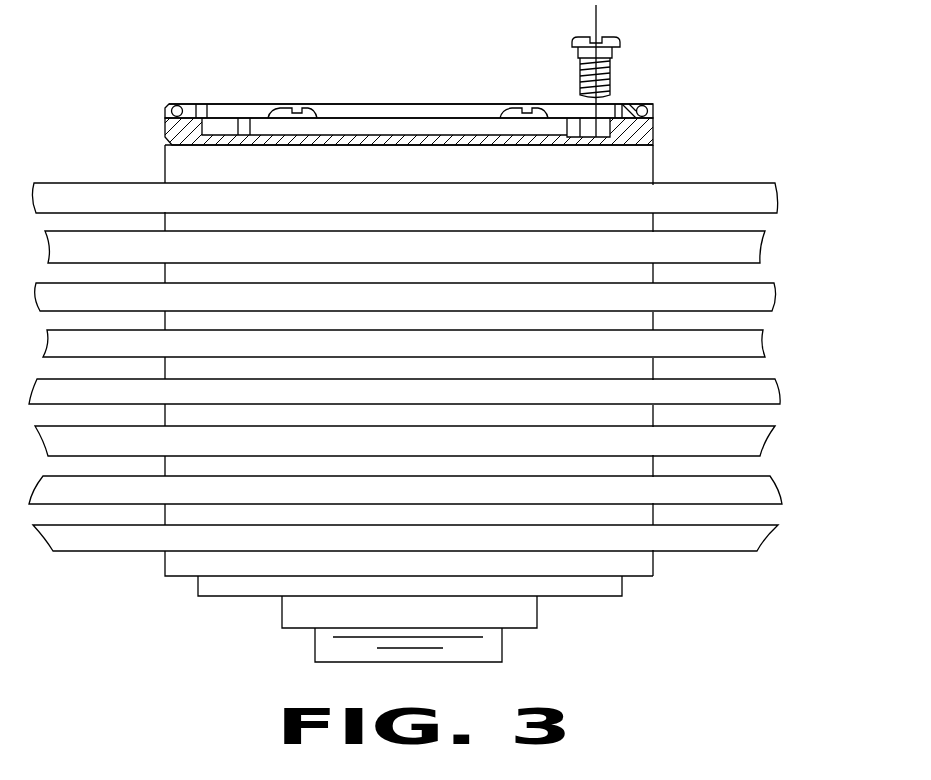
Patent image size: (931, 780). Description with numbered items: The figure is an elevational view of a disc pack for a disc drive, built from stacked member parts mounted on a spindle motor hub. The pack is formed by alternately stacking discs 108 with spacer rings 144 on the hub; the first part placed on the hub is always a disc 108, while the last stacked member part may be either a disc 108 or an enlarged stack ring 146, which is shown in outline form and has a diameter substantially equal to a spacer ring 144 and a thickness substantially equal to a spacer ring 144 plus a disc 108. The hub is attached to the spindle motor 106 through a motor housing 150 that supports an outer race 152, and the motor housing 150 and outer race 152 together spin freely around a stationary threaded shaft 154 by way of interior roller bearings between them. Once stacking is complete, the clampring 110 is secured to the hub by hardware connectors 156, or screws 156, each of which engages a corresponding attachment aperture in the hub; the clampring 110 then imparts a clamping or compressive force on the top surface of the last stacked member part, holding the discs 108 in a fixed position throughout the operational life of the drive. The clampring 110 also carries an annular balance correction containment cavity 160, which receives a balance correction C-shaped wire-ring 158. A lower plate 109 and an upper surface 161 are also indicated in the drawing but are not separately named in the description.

The spindle motor 106 is at (357, 57).
The disc 108 is at (700, 300).
The base plate 109 is at (180, 578).
The clampring 110 is at (152, 126).
The spacer ring 144 is at (655, 227).
The enlarged stack ring 146 is at (165, 168).
The motor housing 150 is at (255, 600).
The outer race 152 is at (518, 612).
The stationary threaded shaft 154 is at (352, 647).
The hardware connector 156 is at (310, 113).
The balance correction C-shaped wire-ring 158 is at (179, 104).
The annular balance correction containment cavity 160 is at (162, 92).
The upper surface 161 is at (693, 120).